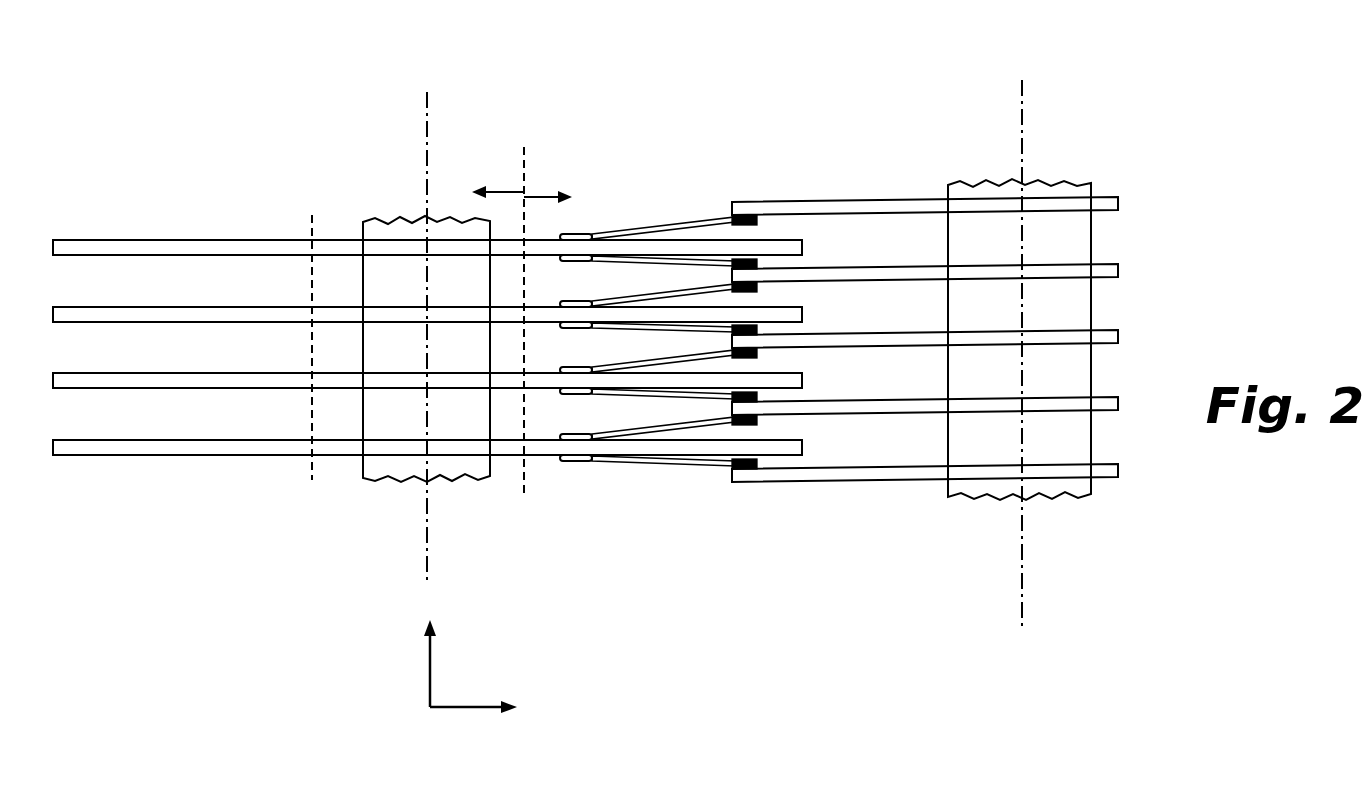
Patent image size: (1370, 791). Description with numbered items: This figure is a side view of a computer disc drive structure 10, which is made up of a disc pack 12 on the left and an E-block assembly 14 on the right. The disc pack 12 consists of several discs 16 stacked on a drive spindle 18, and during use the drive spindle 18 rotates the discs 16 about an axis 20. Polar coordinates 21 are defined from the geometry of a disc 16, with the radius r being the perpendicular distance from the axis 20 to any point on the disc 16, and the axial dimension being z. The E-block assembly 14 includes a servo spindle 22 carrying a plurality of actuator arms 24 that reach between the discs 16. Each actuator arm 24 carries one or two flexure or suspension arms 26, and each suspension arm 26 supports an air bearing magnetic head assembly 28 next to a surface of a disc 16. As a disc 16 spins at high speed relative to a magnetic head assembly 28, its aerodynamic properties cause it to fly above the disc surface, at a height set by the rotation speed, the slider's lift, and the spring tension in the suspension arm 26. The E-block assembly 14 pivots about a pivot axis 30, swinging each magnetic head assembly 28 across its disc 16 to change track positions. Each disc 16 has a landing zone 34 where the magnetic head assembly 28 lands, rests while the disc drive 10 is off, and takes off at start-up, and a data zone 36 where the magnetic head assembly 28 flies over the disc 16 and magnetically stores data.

The disc drive structure 10 is at (748, 118).
The disc pack 12 is at (196, 216).
The E-block assembly 14 is at (946, 138).
The discs 16 is at (118, 239).
The drive spindle 18 is at (388, 232).
The axis 20 is at (428, 100).
The polar coordinates 21 is at (431, 655).
The servo spindle 22 is at (1076, 243).
The actuator arms 24 is at (824, 200).
The suspension arms 26 is at (656, 220).
The air bearing magnetic head assembly 28 is at (565, 233).
The pivot axis 30 is at (1023, 113).
The landing zone 34 is at (498, 179).
The data zone 36 is at (548, 320).